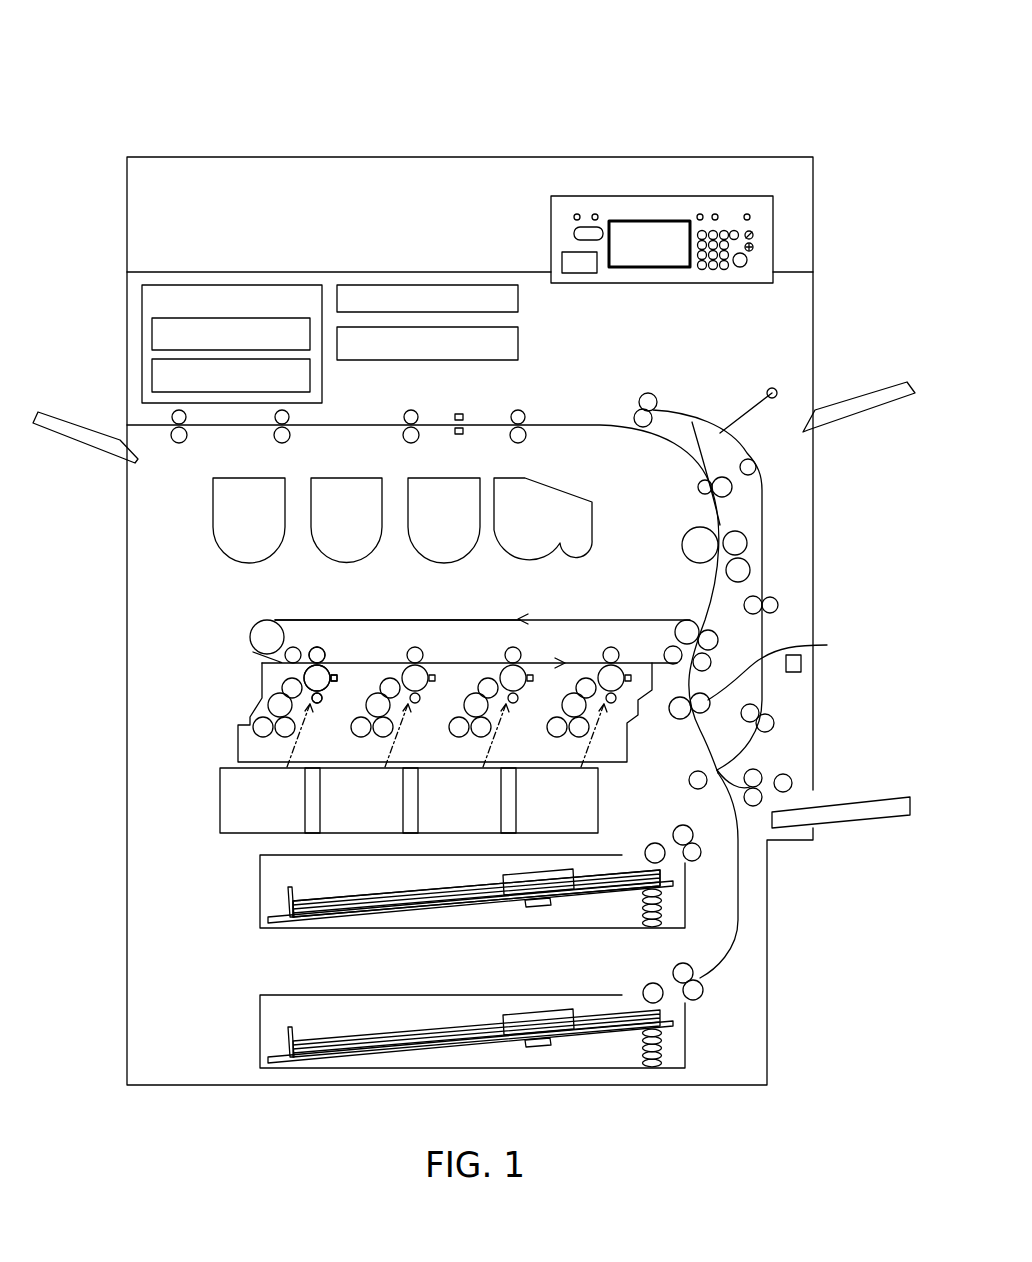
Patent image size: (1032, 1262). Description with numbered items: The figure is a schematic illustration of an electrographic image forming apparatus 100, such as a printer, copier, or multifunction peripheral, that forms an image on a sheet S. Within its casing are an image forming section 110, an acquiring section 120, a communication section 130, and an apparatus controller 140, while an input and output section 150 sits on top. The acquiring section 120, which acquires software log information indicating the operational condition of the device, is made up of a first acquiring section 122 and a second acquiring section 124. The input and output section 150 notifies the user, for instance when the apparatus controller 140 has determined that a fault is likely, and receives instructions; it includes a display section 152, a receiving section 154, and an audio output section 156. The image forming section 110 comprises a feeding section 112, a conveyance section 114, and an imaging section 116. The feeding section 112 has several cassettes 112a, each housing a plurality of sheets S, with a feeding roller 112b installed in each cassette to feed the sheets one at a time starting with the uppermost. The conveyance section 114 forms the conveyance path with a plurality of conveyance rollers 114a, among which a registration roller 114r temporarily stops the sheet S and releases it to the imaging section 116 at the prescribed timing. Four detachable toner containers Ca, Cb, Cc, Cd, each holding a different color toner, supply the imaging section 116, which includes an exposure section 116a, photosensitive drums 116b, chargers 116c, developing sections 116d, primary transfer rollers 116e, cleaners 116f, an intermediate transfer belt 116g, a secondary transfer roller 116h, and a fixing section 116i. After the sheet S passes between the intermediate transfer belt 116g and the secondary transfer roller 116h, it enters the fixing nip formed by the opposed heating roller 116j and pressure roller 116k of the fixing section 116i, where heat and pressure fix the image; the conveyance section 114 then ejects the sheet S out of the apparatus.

The image forming apparatus 100 is at (786, 88).
The image forming section 110 is at (92, 797).
The feeding section 112 is at (380, 929).
The cassette 112a is at (259, 912).
The feeding roller 112b is at (654, 843).
The conveyance section 114 is at (775, 694).
The conveyance roller 114a is at (688, 972).
The registration roller 114r is at (804, 660).
The imaging section 116 is at (484, 643).
The exposure section 116a is at (220, 803).
The photosensitive drum 116b is at (340, 662).
The charger 116c is at (317, 704).
The developing section 116d is at (312, 672).
The primary transfer roller 116e is at (311, 655).
The cleaner 116f is at (339, 680).
The intermediate transfer belt 116g is at (492, 620).
The secondary transfer roller 116h is at (708, 640).
The fixing section 116i is at (753, 518).
The heating roller 116j is at (694, 545).
The pressure roller 116k is at (741, 543).
The acquiring section 120 is at (197, 342).
The first acquiring section 122 is at (151, 333).
The second acquiring section 124 is at (151, 373).
The communication section 130 is at (519, 298).
The apparatus controller 140 is at (519, 341).
The input and output section 150 is at (692, 211).
The display section 152 is at (637, 221).
The receiving section 154 is at (741, 275).
The audio output section 156 is at (560, 258).
The toner container Ca is at (253, 477).
The toner container Cb is at (350, 477).
The toner container Cc is at (448, 477).
The toner container Cd is at (513, 477).
The sheet S is at (370, 893).